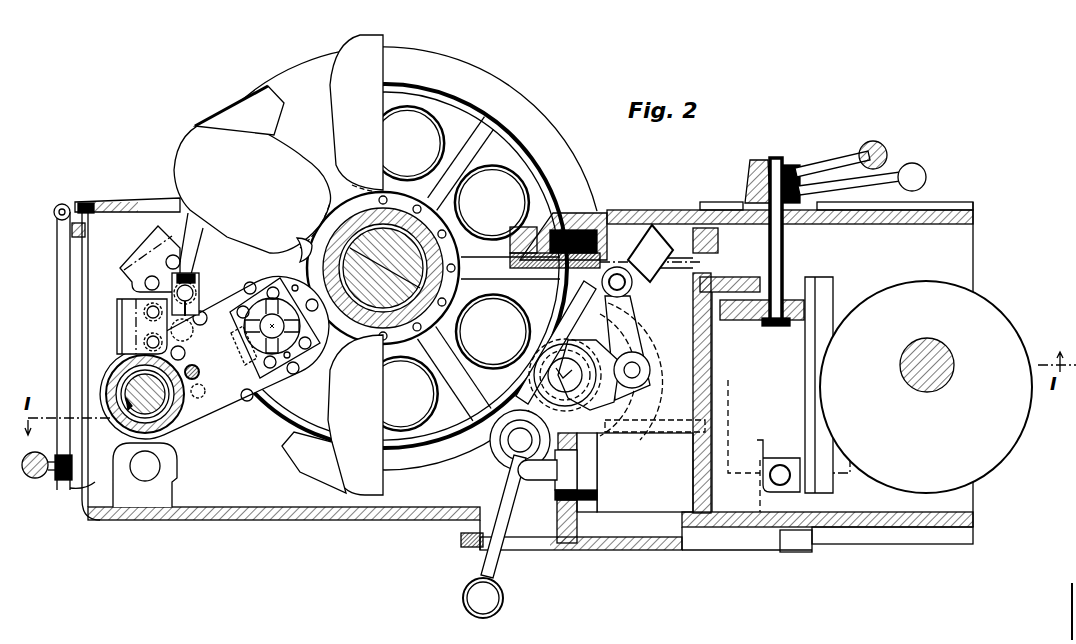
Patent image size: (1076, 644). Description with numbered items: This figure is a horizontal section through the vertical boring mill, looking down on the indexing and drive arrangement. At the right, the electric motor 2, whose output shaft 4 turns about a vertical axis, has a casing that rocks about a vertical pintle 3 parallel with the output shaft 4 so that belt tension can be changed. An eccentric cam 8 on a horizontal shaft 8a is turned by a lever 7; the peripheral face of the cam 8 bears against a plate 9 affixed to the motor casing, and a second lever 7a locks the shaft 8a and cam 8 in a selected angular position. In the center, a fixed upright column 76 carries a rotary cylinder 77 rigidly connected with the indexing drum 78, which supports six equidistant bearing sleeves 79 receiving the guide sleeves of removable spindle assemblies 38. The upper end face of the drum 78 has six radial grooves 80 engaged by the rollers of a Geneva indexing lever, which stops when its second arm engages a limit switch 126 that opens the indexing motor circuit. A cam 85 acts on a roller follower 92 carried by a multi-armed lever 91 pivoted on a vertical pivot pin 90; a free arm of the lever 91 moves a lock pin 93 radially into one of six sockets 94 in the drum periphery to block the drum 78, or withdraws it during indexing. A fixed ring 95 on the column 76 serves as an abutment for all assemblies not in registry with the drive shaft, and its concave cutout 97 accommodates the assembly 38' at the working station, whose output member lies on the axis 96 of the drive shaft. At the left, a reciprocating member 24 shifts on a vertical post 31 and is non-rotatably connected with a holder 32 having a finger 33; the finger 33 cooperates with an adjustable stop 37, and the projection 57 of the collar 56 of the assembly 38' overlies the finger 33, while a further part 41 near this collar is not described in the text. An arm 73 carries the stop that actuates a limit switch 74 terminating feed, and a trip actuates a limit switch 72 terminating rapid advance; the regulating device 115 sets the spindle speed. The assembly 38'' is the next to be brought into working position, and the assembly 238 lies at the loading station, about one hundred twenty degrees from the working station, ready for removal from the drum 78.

The electric motor 2 is at (908, 284).
The vertical pintle 3 is at (763, 480).
The output shaft 4 is at (950, 360).
The lever 7 is at (918, 168).
The second lever 7a is at (873, 141).
The eccentric cam 8 is at (733, 320).
The horizontal shaft 8a is at (783, 245).
The plate 9 is at (808, 404).
The reciprocating member 24 is at (167, 432).
The vertical guide member or post 31 is at (160, 410).
The holder 32 is at (118, 410).
The finger 33 is at (233, 345).
The stop 37 is at (200, 374).
The spindle assembly 38 is at (252, 188).
The spindle assembly 38' is at (209, 405).
The spindle assembly 38'' is at (332, 415).
The hub 41 is at (290, 322).
The collar 56 is at (268, 282).
The projection 57 is at (272, 380).
The limit switch 72 is at (122, 339).
The arm 73 is at (198, 278).
The limit switch 74 is at (137, 266).
The fixed upright column 76 is at (428, 246).
The rotary cylinder 77 is at (440, 290).
The indexing drum 78 is at (457, 80).
The bearing sleeves 79 is at (412, 126).
The grooves 80 is at (506, 94).
The cam 85 is at (574, 377).
The vertical pivot pin 90 is at (640, 370).
The lever 91 is at (638, 333).
The roller follower 92 is at (578, 338).
The lock pin 93 is at (617, 266).
The sockets 94 is at (525, 238).
The ring 95 is at (365, 343).
The axis 96 is at (207, 323).
The concave cutout 97 is at (303, 252).
The regulating device 115 is at (662, 503).
The limit switch 126 is at (652, 266).
The assembly 238 is at (356, 113).